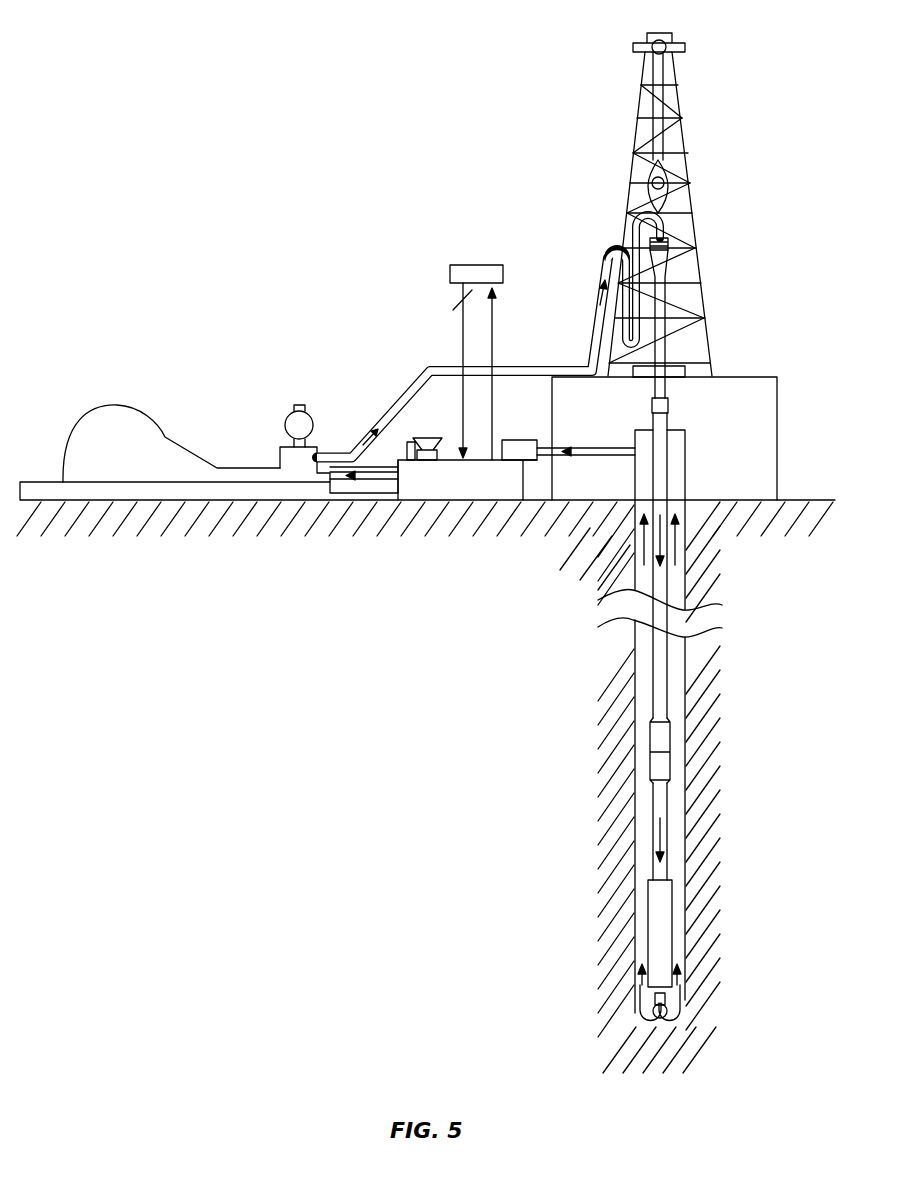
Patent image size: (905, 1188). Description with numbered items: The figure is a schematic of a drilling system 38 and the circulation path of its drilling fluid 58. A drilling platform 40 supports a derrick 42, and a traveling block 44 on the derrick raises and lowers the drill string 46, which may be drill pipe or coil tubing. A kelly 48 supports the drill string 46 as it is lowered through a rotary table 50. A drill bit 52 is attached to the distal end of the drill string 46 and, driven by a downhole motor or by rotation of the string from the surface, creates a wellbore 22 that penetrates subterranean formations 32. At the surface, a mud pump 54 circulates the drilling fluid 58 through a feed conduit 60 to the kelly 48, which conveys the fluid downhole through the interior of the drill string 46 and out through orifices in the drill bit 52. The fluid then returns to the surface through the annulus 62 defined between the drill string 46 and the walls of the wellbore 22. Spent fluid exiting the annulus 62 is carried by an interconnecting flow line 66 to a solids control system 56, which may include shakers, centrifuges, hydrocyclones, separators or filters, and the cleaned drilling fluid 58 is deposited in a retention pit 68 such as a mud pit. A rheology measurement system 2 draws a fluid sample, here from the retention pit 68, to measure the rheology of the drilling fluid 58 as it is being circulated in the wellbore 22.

The drilling system 38 is at (284, 65).
The rheology measurement system 2 is at (476, 265).
The derrick 42 is at (686, 137).
The traveling block 44 is at (680, 180).
The kelly 48 is at (660, 295).
The rotary table 50 is at (688, 375).
The drilling platform 40 is at (778, 395).
The feed conduit 60 is at (432, 367).
The solids control system 56 is at (522, 440).
The interconnecting flow line 66 is at (590, 448).
The drilling fluid 58 is at (350, 455).
The mud pump 54 is at (130, 456).
The retention pit 68 is at (459, 488).
The drill string 46 is at (705, 597).
The subterranean formations 32 is at (558, 683).
The wellbore 22 is at (687, 690).
The annulus 62 is at (665, 840).
The drill bit 52 is at (670, 1005).